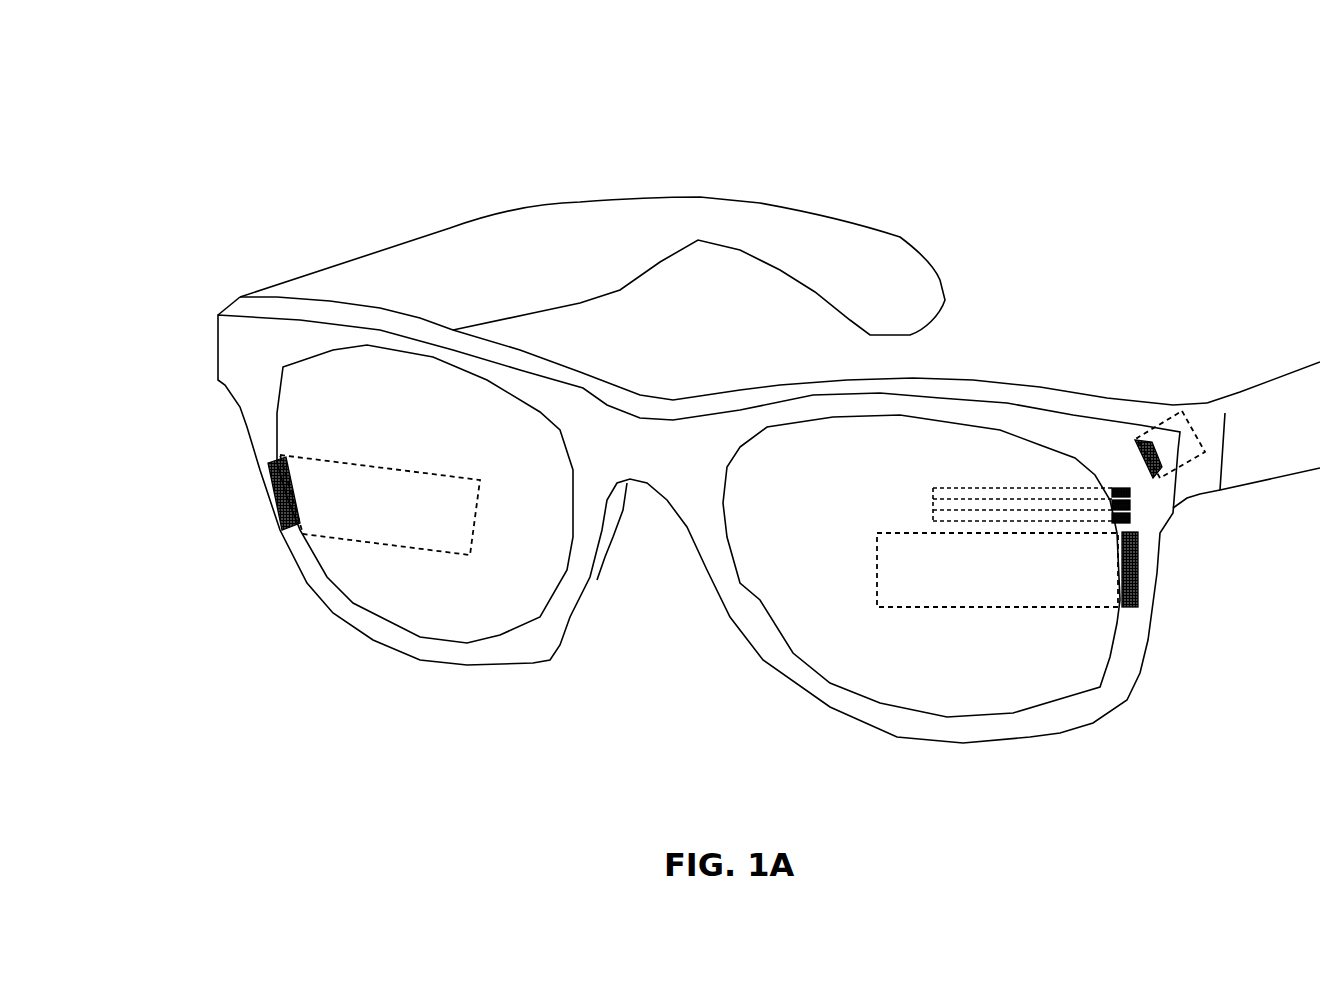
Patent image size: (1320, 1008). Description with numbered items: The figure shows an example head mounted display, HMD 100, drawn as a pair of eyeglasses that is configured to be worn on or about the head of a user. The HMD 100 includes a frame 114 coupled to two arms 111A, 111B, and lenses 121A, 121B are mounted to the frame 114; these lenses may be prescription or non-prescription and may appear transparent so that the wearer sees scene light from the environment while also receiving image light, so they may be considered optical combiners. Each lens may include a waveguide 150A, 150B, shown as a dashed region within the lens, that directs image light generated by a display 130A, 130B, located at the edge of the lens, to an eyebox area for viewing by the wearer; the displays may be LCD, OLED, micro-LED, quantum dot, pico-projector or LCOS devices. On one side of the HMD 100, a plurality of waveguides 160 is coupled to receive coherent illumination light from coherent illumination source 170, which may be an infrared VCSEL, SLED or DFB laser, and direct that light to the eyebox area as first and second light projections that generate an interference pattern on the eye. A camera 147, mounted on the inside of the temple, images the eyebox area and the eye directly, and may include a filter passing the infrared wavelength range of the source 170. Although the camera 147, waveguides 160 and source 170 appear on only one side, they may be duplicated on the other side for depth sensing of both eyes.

The HMD 100 is at (1294, 66).
The arm 111A is at (560, 279).
The arm 111B is at (1295, 443).
The frame 114 is at (266, 358).
The lens 121A is at (540, 534).
The lens 121B is at (997, 701).
The display 130A is at (285, 505).
The display 130B is at (1137, 573).
The camera 147 is at (1188, 422).
The waveguide 150A is at (300, 453).
The waveguide 150B is at (1105, 607).
The waveguides 160 is at (912, 497).
The coherent illumination source 170 is at (1140, 514).